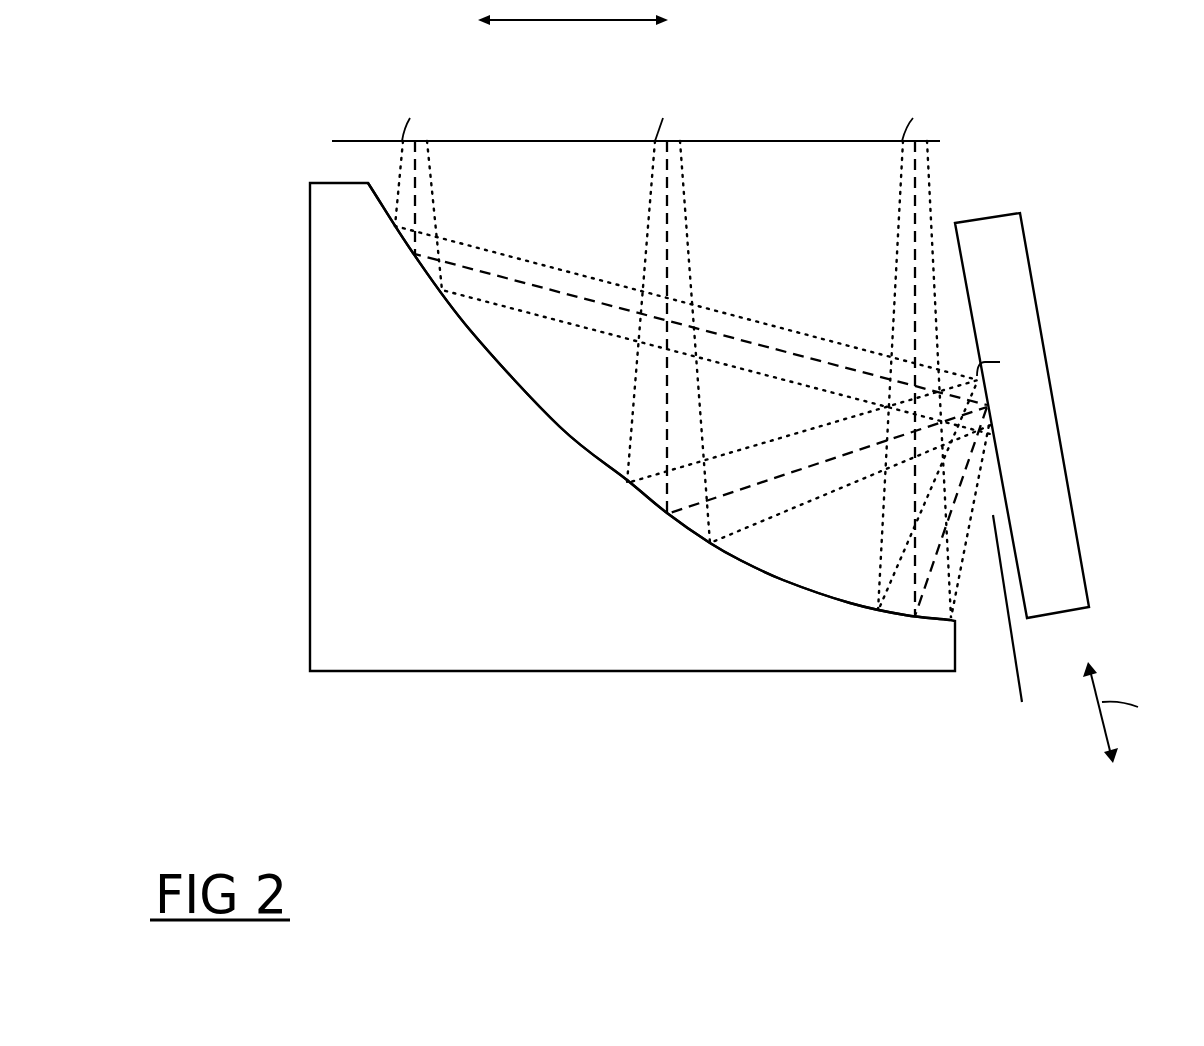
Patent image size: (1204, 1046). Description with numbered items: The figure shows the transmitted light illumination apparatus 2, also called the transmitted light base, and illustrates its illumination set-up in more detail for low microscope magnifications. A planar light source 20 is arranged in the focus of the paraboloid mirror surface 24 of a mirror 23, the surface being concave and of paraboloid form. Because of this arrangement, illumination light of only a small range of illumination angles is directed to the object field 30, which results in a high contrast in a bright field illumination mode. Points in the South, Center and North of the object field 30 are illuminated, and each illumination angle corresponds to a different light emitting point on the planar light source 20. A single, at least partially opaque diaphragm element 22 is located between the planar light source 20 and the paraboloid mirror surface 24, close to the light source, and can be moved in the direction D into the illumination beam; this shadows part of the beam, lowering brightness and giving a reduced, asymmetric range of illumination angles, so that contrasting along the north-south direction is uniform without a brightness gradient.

The transmitted light illumination apparatus 2 is at (697, 382).
The planar light source 20 is at (1078, 532).
The diaphragm element 22 is at (1010, 632).
The mirror 23 is at (308, 533).
The paraboloid mirror surface 24 is at (782, 577).
The object field 30 is at (803, 141).